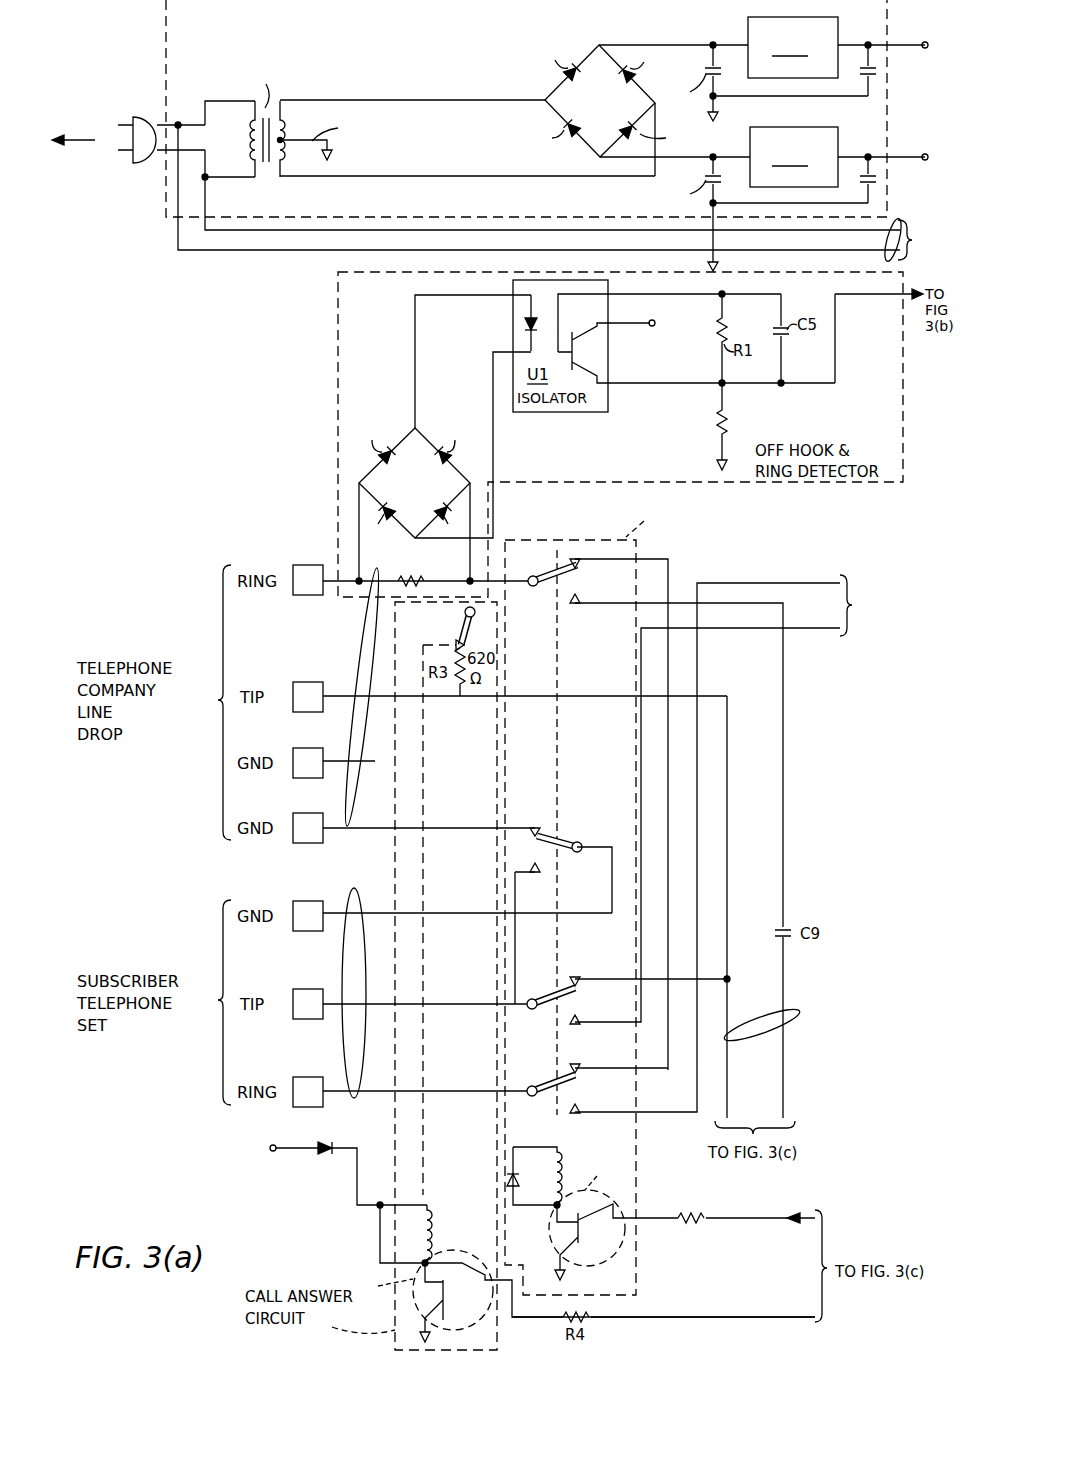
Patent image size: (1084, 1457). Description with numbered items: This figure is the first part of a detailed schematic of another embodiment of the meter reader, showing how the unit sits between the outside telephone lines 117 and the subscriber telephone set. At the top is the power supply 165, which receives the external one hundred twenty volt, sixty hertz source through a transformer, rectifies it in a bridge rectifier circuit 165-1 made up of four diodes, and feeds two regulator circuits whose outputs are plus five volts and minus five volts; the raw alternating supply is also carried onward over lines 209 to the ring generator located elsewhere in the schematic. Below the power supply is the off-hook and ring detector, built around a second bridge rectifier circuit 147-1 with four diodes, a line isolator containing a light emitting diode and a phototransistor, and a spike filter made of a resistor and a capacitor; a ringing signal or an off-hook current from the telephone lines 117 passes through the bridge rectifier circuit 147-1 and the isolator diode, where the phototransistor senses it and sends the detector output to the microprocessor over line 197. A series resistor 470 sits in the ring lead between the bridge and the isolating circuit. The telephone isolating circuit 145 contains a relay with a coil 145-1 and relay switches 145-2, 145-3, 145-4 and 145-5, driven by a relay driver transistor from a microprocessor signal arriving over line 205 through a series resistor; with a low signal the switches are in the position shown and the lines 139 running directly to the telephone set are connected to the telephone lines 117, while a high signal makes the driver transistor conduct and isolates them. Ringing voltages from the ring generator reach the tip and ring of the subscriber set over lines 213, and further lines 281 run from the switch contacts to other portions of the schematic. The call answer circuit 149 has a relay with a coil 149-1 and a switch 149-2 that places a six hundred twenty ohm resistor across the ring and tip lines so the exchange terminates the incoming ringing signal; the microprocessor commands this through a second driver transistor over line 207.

The power supply 165 is at (412, 46).
The bridge rectifier circuit 165-1 is at (622, 111).
The lines 209 is at (893, 225).
The line 197 is at (836, 367).
The bridge rectifier circuit 147-1 is at (438, 494).
The telephone lines 117 is at (377, 568).
The 470 ohm resistor 470 is at (417, 568).
The telephone isolating circuit 145 is at (565, 548).
The coil 145-1 is at (560, 1172).
The relay switch 145-2 is at (562, 575).
The relay switch 145-3 is at (540, 842).
The relay switch 145-4 is at (548, 990).
The relay switch 145-5 is at (548, 1078).
The lines 213 is at (737, 583).
The call answer circuit 149 is at (392, 1230).
The coil 149-1 is at (430, 1230).
The switch 149-2 is at (478, 640).
The lines 139 is at (352, 898).
The lines to fig 3(c) 281 is at (798, 1024).
The line 205 is at (757, 1221).
The line 207 is at (733, 1320).